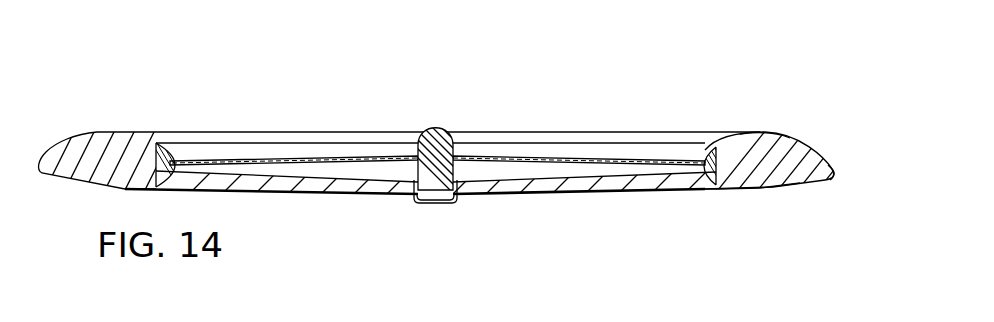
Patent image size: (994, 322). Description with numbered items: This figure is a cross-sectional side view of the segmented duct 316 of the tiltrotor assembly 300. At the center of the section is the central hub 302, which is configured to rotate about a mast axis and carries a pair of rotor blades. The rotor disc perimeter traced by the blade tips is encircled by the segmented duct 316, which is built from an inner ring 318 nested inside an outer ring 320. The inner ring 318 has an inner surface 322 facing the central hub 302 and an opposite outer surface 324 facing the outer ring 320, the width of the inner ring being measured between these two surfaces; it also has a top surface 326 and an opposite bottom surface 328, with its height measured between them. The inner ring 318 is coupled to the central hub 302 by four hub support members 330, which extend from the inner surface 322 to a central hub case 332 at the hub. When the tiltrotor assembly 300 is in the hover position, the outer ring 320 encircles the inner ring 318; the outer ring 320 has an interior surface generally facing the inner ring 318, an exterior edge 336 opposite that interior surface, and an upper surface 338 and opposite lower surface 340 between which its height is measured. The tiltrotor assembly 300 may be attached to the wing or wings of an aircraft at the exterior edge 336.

The tiltrotor assembly 300 is at (131, 61).
The central hub 302 is at (437, 128).
The segmented duct 316 is at (815, 142).
The inner ring 318 is at (168, 150).
The outer ring 320 is at (101, 131).
The inner surface 322 is at (700, 158).
The outer surface 324 is at (737, 190).
The top surface 326 is at (708, 150).
The bottom surface 328 is at (710, 190).
The hub support members 330 is at (297, 183).
The central hub case 332 is at (435, 204).
The exterior edge 336 is at (837, 172).
The upper surface 338 is at (780, 133).
The lower surface 340 is at (780, 187).